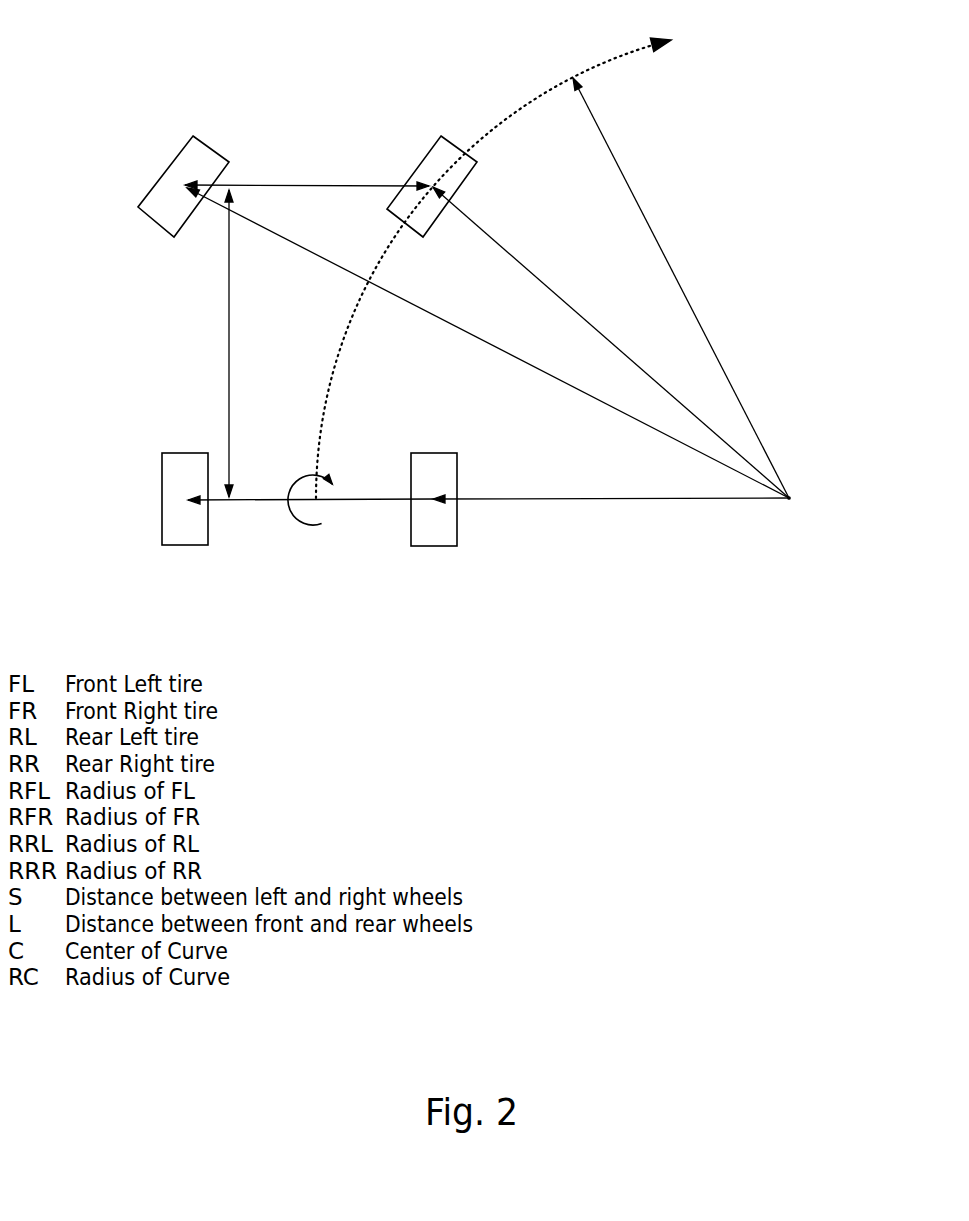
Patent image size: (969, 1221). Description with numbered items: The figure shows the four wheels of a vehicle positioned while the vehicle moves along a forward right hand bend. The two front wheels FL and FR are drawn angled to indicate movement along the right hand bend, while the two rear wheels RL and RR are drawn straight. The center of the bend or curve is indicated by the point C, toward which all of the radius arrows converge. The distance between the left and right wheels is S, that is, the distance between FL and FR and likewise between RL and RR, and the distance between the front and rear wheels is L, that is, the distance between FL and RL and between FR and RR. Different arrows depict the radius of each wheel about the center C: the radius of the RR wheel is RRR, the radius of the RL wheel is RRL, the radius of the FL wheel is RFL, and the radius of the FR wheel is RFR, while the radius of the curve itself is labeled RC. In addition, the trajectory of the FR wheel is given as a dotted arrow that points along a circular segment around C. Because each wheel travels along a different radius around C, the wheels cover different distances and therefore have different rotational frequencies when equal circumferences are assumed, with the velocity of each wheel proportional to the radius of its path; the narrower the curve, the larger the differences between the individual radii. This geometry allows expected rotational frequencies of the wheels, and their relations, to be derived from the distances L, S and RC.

The front left wheel FL is at (183, 170).
The front right wheel FR is at (432, 170).
The rear left wheel RL is at (185, 518).
The rear right wheel RR is at (434, 518).
The radius of the FL wheel RFL is at (488, 343).
The radius of the FR wheel RFR is at (611, 342).
The radius of the RL wheel RRL is at (310, 517).
The radius of the RR wheel RRR is at (611, 518).
The distance between left and right wheels S is at (307, 167).
The distance between front and rear wheels L is at (238, 343).
The center of the curve C is at (802, 500).
The radius of the curve RC is at (681, 288).
The trajectory of the FR wheel trajectory is at (493, 264).